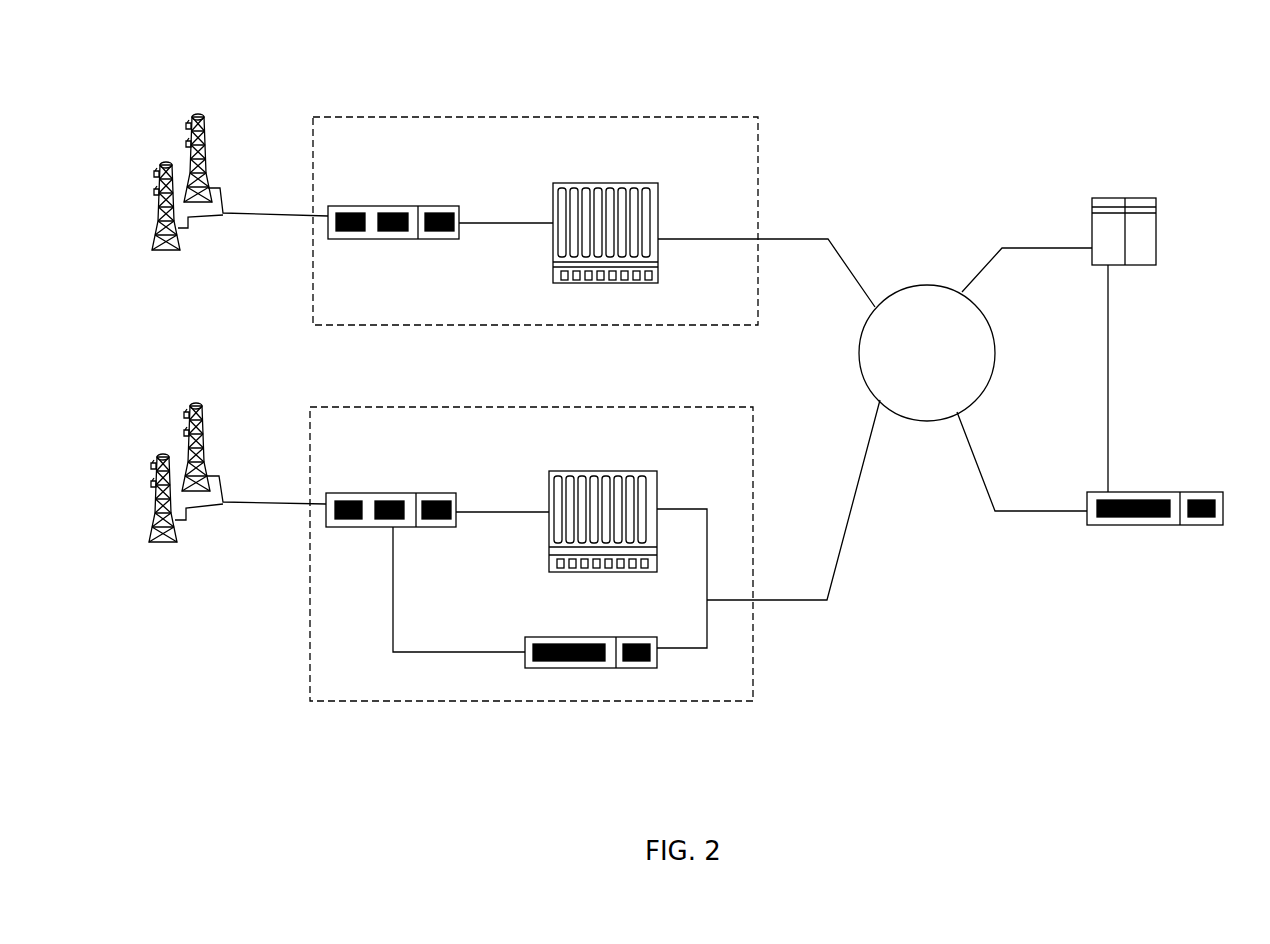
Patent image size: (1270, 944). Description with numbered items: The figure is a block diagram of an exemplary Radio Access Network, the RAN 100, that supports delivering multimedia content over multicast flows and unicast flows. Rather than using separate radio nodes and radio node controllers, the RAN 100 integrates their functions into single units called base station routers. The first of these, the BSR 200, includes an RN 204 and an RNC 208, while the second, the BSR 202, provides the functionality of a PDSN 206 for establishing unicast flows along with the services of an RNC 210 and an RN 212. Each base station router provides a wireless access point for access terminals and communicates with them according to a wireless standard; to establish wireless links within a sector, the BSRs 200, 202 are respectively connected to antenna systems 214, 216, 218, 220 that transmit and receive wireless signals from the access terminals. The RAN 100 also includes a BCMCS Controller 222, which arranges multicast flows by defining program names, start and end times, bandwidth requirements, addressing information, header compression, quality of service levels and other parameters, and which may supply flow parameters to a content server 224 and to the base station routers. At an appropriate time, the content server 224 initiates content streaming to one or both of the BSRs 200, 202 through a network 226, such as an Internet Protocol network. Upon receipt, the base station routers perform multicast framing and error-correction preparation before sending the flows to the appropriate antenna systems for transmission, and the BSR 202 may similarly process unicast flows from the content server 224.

The RAN 100 is at (1000, 74).
The BSR 200 is at (709, 117).
The BSR 202 is at (709, 407).
The RN 204 is at (455, 206).
The PDSN 206 is at (640, 635).
The RNC 208 is at (658, 183).
The RNC 210 is at (657, 471).
The RN 212 is at (452, 493).
The antenna system 214 is at (202, 153).
The antenna system 216 is at (155, 242).
The antenna system 218 is at (202, 445).
The antenna system 220 is at (154, 532).
The BCMCS Controller 222 is at (1223, 492).
The content server 224 is at (1157, 198).
The network 226 is at (997, 335).